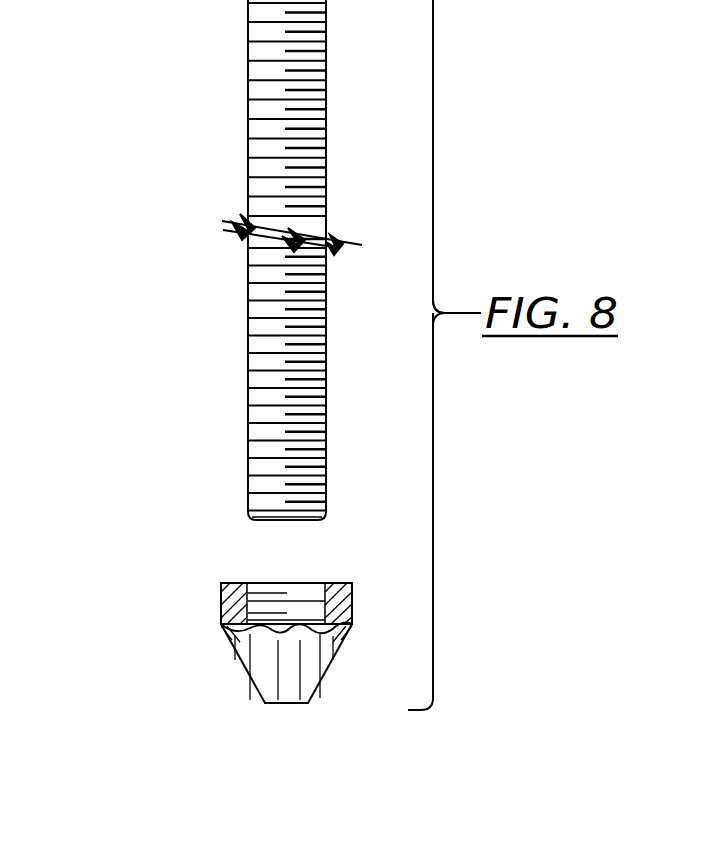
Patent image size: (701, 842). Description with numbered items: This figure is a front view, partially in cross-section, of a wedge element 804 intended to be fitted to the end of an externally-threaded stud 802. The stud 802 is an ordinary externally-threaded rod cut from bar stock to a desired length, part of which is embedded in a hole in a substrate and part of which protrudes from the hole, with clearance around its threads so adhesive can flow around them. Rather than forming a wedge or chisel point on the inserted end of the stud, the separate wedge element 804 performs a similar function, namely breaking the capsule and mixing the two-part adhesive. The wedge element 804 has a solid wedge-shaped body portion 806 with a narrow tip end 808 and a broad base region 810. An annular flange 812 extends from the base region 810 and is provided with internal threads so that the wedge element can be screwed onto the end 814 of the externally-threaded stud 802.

The externally-threaded rod (stud) 802 is at (255, 30).
The wedge element 804 is at (173, 693).
The wedge-shaped body portion 806 is at (295, 665).
The tip end 808 is at (278, 703).
The base region 810 is at (228, 637).
The annular flange 812 is at (222, 594).
The end of the externally-threaded stud 814 is at (272, 521).